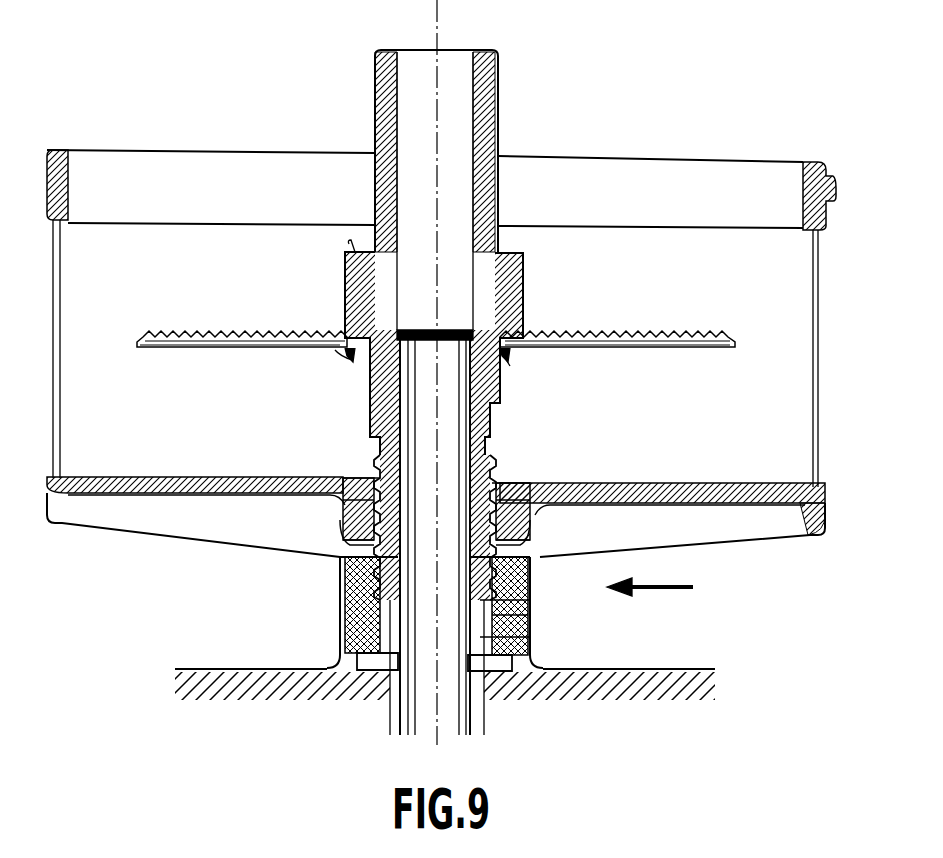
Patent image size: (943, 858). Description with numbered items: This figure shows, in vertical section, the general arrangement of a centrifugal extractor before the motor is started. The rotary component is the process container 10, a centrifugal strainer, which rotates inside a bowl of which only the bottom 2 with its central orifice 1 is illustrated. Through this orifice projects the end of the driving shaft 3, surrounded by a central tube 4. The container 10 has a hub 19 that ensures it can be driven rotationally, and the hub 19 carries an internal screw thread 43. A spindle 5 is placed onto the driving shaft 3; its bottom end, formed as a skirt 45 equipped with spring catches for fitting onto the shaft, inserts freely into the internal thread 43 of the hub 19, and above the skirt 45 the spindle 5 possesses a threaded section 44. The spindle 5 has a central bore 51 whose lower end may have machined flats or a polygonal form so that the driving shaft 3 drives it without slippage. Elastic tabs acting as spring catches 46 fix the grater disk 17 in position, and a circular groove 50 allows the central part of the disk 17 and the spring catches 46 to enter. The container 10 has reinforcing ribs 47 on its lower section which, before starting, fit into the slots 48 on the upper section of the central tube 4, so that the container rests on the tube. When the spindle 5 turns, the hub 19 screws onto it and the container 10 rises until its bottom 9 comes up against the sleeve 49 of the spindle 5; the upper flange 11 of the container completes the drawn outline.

The central orifice 1 is at (368, 664).
The bottom 2 is at (672, 672).
The driving shaft 3 is at (440, 443).
The central tube 4 is at (343, 632).
The spindle 5 is at (497, 113).
The bottom 9 is at (758, 487).
The container 10 is at (816, 338).
The upper flange of housing 11 is at (820, 172).
The grater disk 17 is at (655, 332).
The hub 19 is at (517, 638).
The internal screw thread 43 is at (345, 603).
The threaded section 44 is at (486, 497).
The skirt 45 is at (518, 600).
The spring catches 46 is at (507, 363).
The reinforcing ribs 47 is at (760, 527).
The slots 48 is at (342, 540).
The sleeve 49 is at (497, 291).
The circular groove 50 is at (360, 480).
The central bore 51 is at (468, 404).